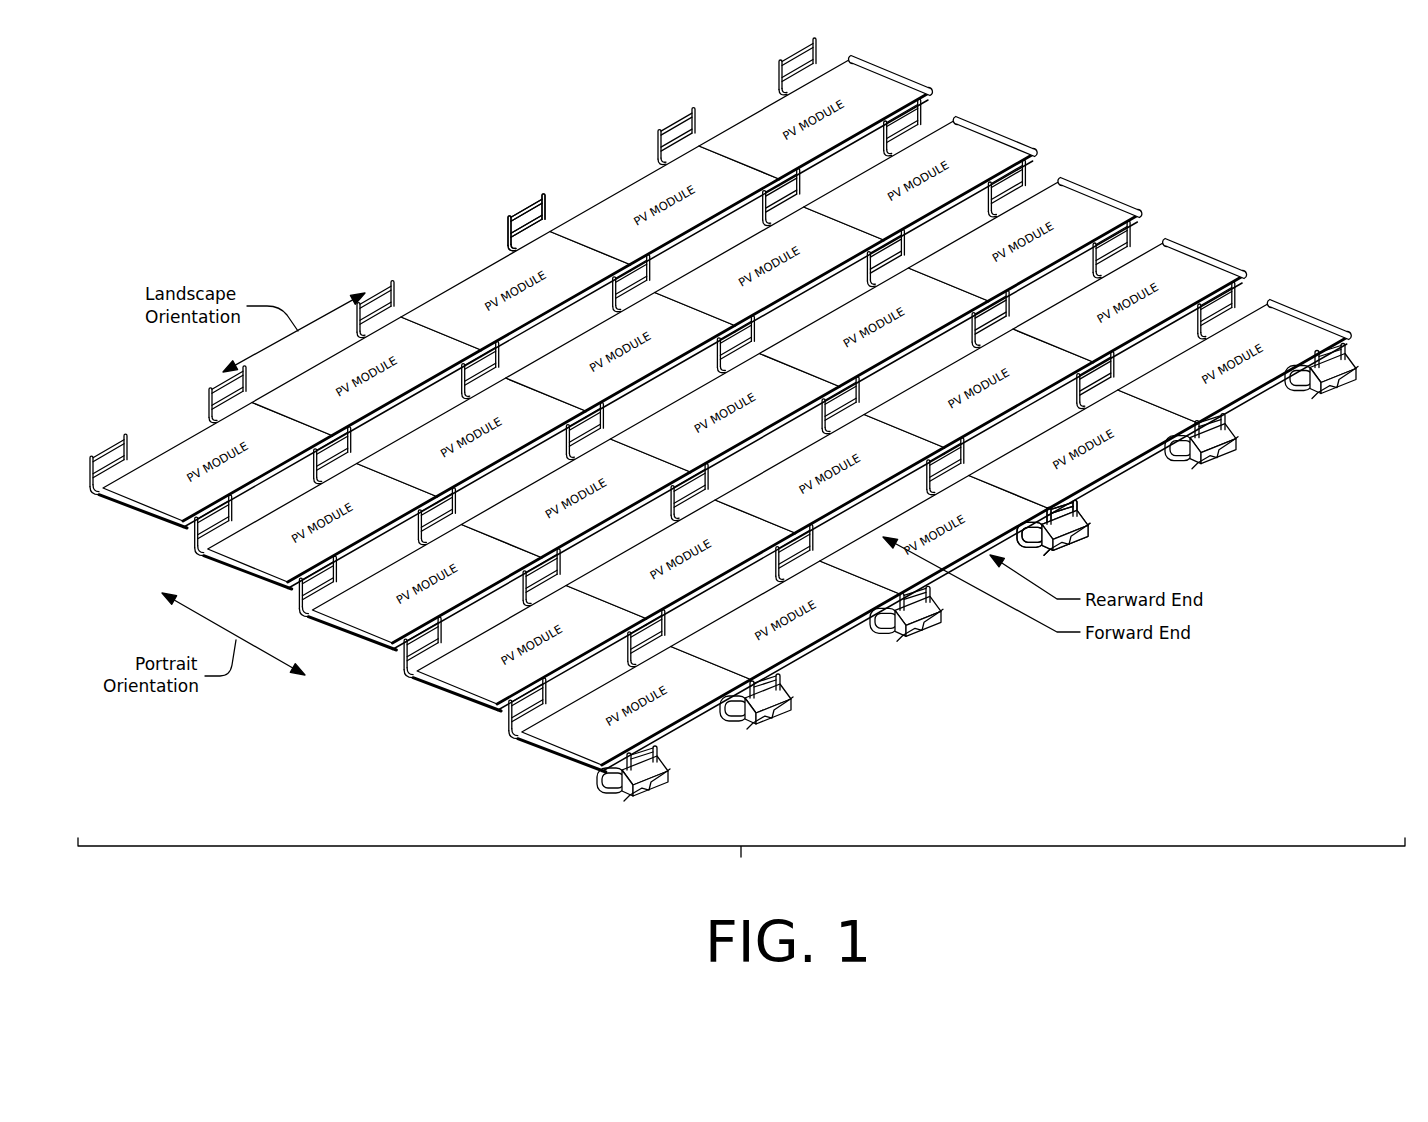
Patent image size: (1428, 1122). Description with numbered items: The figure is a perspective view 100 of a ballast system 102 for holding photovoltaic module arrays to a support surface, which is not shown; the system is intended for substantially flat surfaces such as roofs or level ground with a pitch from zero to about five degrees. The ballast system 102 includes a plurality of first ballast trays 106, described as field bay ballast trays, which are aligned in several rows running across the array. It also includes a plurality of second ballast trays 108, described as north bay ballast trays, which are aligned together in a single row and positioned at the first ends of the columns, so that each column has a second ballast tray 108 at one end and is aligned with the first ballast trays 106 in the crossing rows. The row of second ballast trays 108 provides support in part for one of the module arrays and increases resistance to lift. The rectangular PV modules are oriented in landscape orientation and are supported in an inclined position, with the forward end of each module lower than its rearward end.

The perspective view 100 is at (741, 857).
The ballast system 102 is at (380, 168).
The first ballast tray 106 is at (512, 218).
The second ballast tray 108 is at (1071, 506).